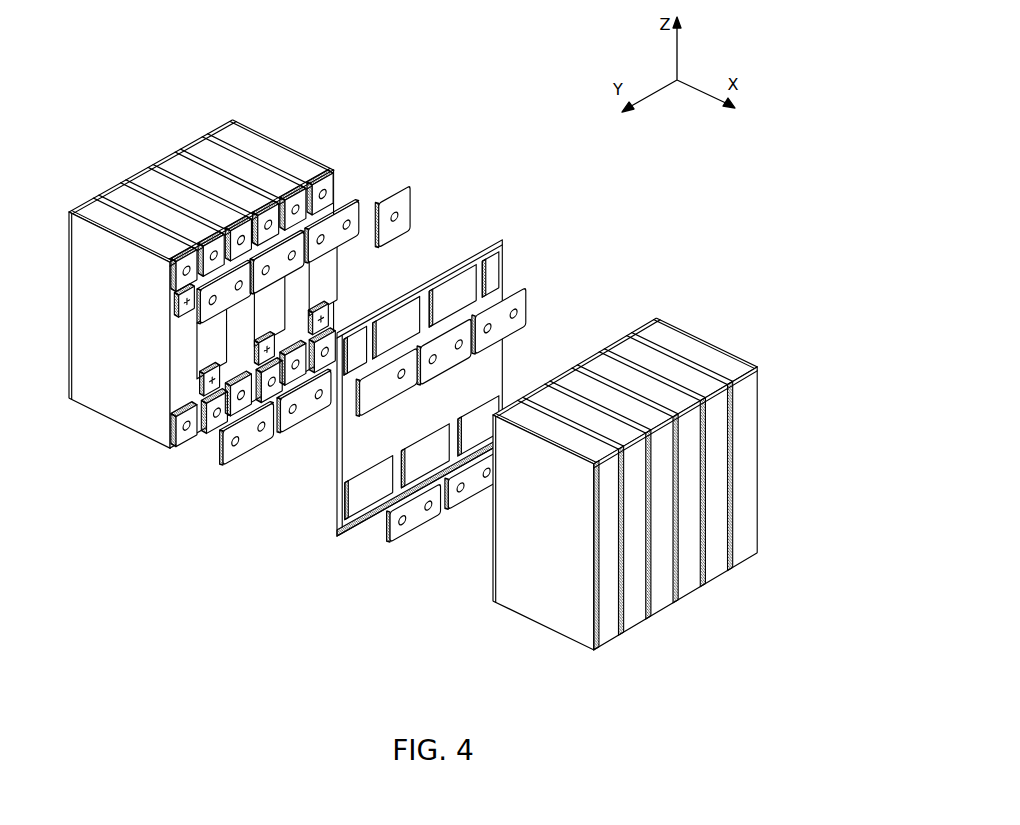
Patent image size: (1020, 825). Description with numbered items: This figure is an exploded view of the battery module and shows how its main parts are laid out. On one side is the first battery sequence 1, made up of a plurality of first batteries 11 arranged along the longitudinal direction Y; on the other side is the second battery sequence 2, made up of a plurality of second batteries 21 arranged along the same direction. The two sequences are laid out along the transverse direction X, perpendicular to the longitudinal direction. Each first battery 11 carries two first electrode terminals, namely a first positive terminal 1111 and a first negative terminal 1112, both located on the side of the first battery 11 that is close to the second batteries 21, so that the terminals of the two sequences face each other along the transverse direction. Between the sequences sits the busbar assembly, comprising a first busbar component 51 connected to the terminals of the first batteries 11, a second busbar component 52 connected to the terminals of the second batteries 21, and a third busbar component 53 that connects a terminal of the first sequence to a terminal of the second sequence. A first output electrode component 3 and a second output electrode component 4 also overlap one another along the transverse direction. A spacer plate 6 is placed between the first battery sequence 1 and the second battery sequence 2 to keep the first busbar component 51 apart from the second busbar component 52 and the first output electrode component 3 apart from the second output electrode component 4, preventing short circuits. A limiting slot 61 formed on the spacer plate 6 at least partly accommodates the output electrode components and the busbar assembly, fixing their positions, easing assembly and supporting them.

The first battery sequence 1 is at (303, 103).
The first battery 11 is at (88, 201).
The first positive terminal 1111 is at (190, 437).
The first negative terminal 1112 is at (170, 309).
The first output electrode component 3 is at (203, 320).
The first busbar component 51 is at (250, 452).
The second busbar component 52 is at (520, 295).
The third busbar component 53 is at (405, 216).
The second output electrode component 4 is at (373, 395).
The spacer plate 6 is at (500, 357).
The limiting slot 61 is at (452, 295).
The second battery sequence 2 is at (717, 308).
The second battery 21 is at (601, 646).